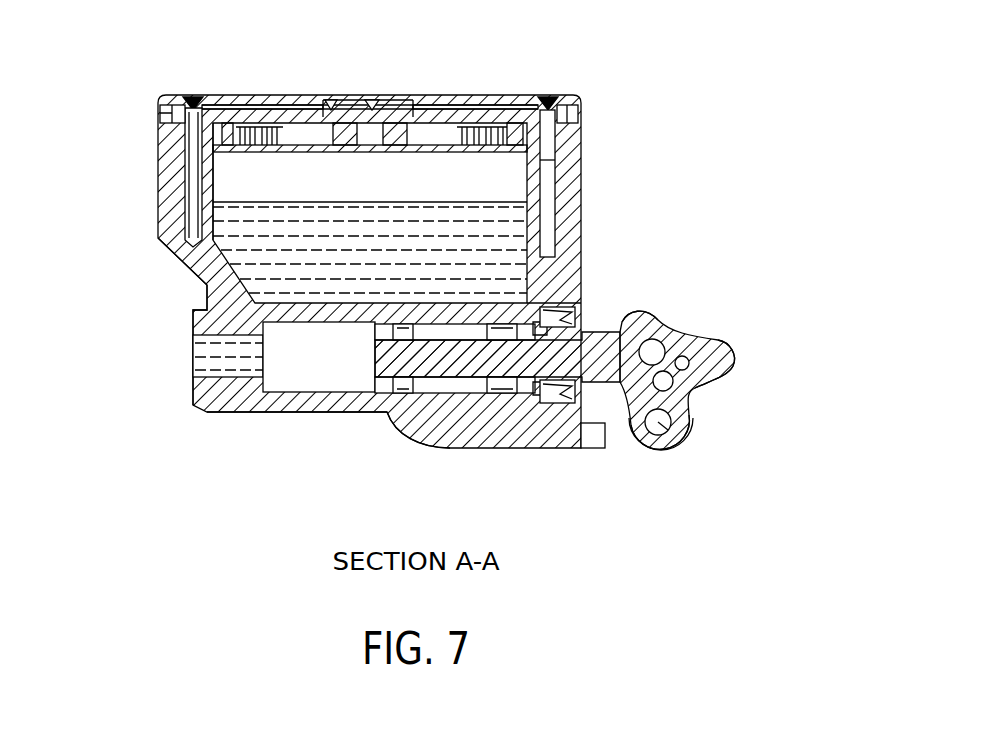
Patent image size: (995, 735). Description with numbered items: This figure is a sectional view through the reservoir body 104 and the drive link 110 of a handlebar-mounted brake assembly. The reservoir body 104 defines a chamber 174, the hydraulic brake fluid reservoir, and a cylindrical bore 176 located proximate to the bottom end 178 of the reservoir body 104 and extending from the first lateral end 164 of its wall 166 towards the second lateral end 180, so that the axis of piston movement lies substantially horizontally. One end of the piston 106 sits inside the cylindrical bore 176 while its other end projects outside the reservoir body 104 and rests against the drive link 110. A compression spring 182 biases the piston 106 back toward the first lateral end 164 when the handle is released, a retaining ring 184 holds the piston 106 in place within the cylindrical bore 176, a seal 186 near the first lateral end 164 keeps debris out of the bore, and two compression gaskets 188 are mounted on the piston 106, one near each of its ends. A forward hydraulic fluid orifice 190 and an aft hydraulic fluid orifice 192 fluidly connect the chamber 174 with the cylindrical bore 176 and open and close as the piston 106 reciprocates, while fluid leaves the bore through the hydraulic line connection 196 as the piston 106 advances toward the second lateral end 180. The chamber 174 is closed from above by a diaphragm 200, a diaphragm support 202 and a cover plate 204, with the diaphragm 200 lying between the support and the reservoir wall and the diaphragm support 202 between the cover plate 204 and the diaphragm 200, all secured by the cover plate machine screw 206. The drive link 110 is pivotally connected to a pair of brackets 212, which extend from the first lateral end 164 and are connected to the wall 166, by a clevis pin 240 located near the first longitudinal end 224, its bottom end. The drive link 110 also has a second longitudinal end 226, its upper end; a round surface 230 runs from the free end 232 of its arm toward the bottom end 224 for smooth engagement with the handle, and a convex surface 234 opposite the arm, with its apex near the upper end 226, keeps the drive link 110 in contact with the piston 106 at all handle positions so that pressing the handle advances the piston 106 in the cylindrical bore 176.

The reservoir body 104 is at (158, 238).
The piston 106 is at (620, 330).
The drive link 110 is at (703, 396).
The first lateral end 164 is at (583, 212).
The wall 166 is at (157, 243).
The chamber 174 is at (175, 240).
The cylindrical bore 176 is at (385, 408).
The bottom end 178 is at (320, 412).
The second lateral end 180 is at (158, 209).
The compression spring 182 is at (277, 395).
The retaining ring 184 is at (540, 395).
The seal 186 is at (596, 312).
The compression gaskets 188 is at (503, 390).
The forward hydraulic fluid orifice 190 is at (437, 303).
The aft hydraulic fluid orifice 192 is at (398, 310).
The hydraulic line connection 196 is at (218, 363).
The diaphragm 200 is at (297, 150).
The diaphragm support 202 is at (337, 95).
The cover plate 204 is at (415, 95).
The cover plate machine screw 206 is at (186, 97).
The brackets 212 is at (615, 447).
The first longitudinal end 224 is at (655, 455).
The second longitudinal end 226 is at (640, 313).
The round surface 230 is at (720, 376).
The free end 232 is at (733, 360).
The convex surface 234 is at (590, 360).
The clevis pin 240 is at (668, 452).